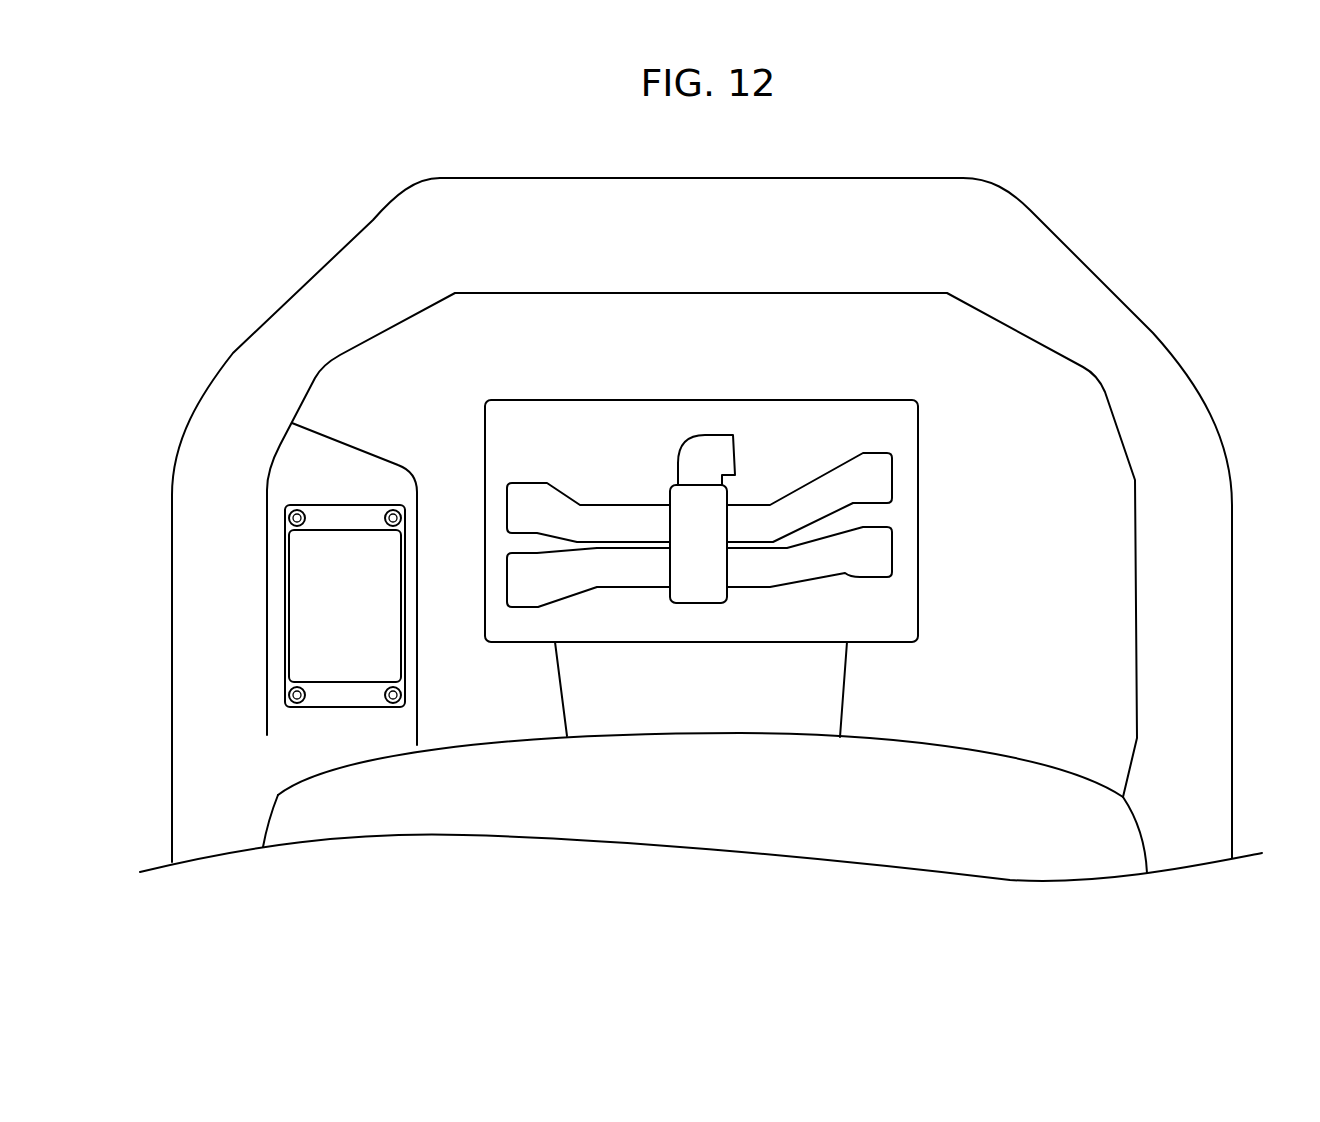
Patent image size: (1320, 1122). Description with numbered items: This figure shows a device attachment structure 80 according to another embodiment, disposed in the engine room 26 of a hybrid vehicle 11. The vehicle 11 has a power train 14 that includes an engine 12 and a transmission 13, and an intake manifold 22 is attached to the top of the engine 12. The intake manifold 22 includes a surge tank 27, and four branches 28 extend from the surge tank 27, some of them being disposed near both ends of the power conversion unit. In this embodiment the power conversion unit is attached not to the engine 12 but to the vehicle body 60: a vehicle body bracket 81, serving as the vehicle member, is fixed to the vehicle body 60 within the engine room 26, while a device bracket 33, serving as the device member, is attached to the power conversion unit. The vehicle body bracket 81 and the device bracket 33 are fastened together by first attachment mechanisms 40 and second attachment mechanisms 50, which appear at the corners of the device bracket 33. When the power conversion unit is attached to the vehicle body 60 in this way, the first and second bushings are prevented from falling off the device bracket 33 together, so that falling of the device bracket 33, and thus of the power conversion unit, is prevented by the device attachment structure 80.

The hybrid vehicle 11 is at (1120, 212).
The vehicle body 60 is at (838, 210).
The power train 14 is at (916, 338).
The engine room 26 is at (1016, 421).
The transmission 13 is at (729, 744).
The engine 12 is at (819, 402).
The surge tank 27 is at (695, 510).
The intake manifold 22 is at (631, 494).
The branches 28 is at (532, 583).
The vehicle body bracket 81 is at (390, 478).
The device attachment structure 80 is at (308, 494).
The device bracket 33 is at (348, 513).
The first attachment mechanisms 40 is at (288, 518).
The second attachment mechanisms 50 is at (400, 515).